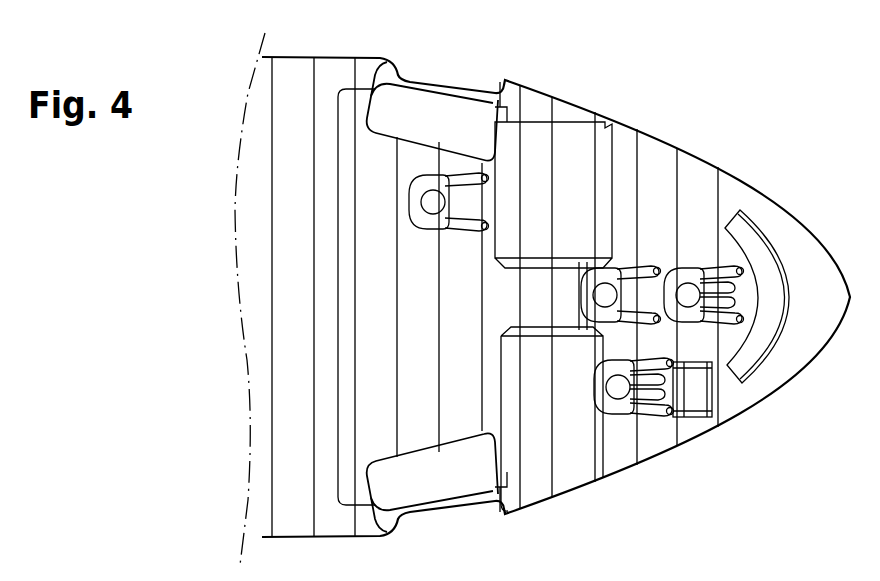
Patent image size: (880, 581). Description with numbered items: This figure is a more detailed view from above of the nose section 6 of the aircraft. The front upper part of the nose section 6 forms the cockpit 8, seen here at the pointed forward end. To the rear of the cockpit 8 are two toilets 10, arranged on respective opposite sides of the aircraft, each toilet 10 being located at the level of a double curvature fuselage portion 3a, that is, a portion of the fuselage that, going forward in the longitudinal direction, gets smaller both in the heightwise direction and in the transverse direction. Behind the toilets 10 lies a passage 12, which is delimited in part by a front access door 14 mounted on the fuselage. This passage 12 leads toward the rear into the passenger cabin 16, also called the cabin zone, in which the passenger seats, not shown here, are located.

The nose section 6 is at (768, 136).
The cockpit 8 is at (722, 349).
The toilet 10 is at (536, 138).
The double curvature fuselage portion 3a is at (595, 188).
The passage 12 is at (368, 232).
The front access door 14 is at (436, 88).
The passenger cabin 16 is at (307, 322).